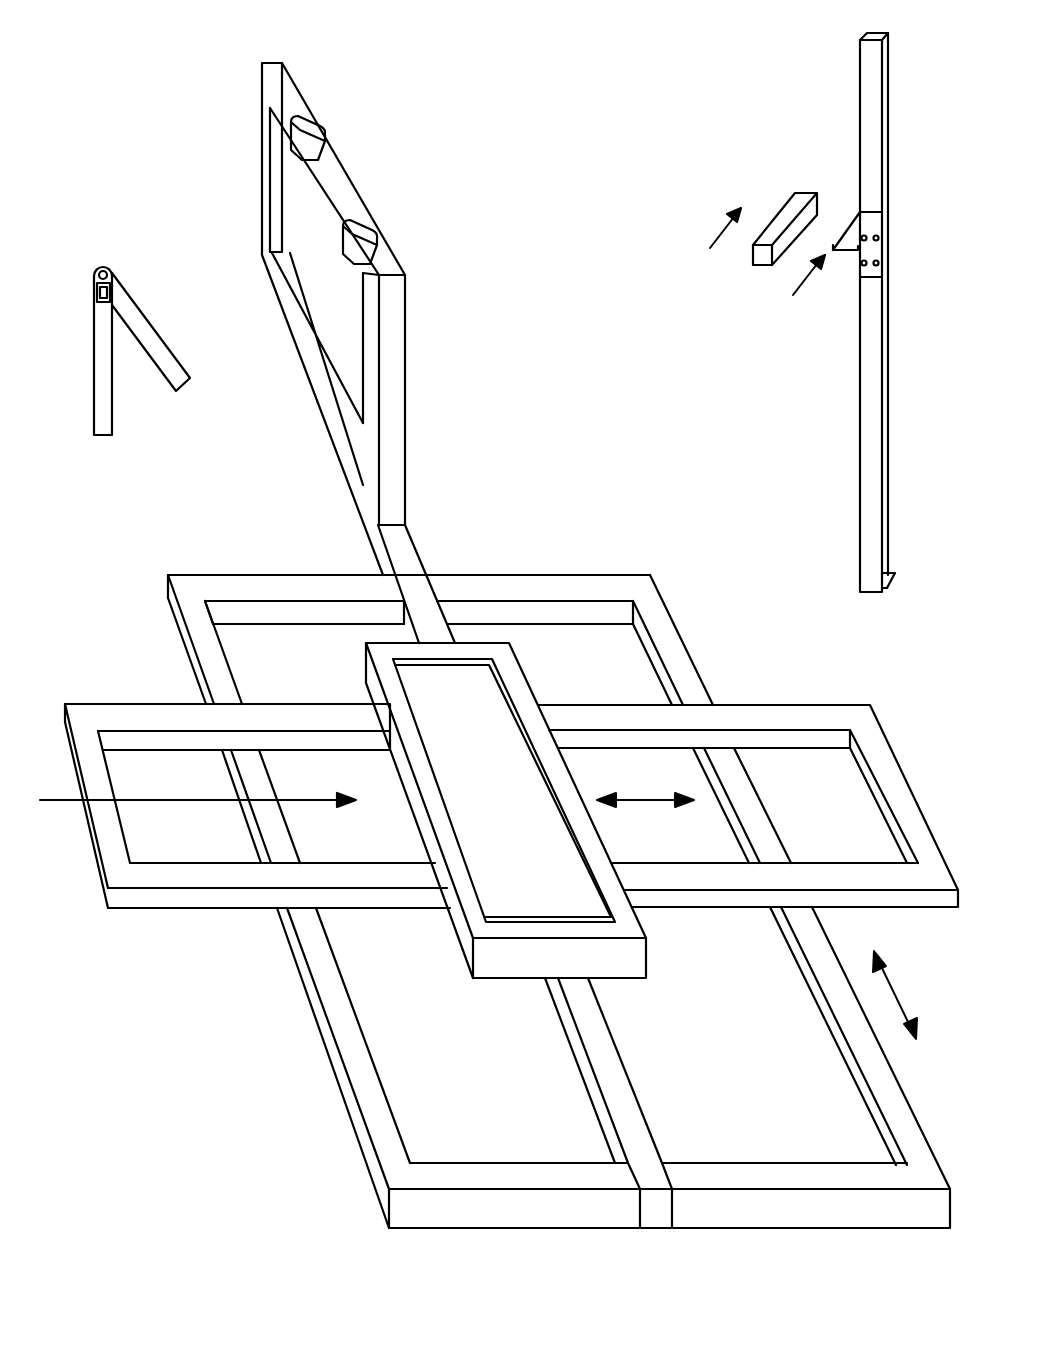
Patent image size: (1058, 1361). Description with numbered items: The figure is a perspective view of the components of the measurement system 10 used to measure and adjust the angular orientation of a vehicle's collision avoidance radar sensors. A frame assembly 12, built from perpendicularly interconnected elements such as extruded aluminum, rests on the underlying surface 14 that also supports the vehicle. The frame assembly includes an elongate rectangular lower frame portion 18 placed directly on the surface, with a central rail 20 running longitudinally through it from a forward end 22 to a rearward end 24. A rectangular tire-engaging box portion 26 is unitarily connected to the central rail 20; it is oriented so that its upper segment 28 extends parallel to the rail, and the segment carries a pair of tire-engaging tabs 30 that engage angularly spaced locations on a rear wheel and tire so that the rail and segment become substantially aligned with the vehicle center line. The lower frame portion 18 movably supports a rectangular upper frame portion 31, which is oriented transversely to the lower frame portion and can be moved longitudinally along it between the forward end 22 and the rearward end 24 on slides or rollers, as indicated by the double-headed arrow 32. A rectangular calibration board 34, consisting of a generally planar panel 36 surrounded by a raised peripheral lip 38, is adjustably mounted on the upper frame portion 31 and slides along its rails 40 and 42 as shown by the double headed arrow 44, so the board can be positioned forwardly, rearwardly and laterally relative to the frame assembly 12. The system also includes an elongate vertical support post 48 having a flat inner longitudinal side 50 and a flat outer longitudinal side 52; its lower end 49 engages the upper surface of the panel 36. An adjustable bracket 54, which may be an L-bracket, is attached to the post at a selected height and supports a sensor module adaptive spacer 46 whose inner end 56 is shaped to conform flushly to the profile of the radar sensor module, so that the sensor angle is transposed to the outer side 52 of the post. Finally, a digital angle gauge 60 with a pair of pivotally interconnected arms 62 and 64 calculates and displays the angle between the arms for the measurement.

The measurement system 10 is at (130, 176).
The frame assembly 12 is at (262, 152).
The underlying surface 14 is at (138, 578).
The lower frame portion 18 is at (672, 613).
The central rail 20 is at (576, 1050).
The forward end 22 is at (316, 575).
The rearward end 24 is at (797, 1163).
The tire-engaging box portion 26 is at (283, 325).
The upper segment 28 is at (388, 262).
The tire-engaging tabs 30 is at (320, 125).
The upper frame portion 31 is at (785, 703).
The double-headed arrow 32 is at (894, 990).
The calibration board 34 is at (517, 663).
The planar panel 36 is at (485, 782).
The raised side edge or lip 38 is at (392, 688).
The rail of upper frame portion 40 is at (147, 703).
The rail of upper frame portion 42 is at (198, 863).
The double headed arrow 44 is at (655, 802).
The sensor module adaptive spacer 46 is at (782, 203).
The vertical support post 48 is at (862, 452).
The lower end of support post 49 is at (890, 585).
The inner longitudinal side 50 is at (862, 330).
The outer longitudinal side 52 is at (868, 33).
The adjustable bracket 54 is at (864, 238).
The inner end 56 is at (764, 258).
The digital angle gauge 60 is at (145, 313).
The arm 62 is at (107, 437).
The arm 64 is at (178, 387).